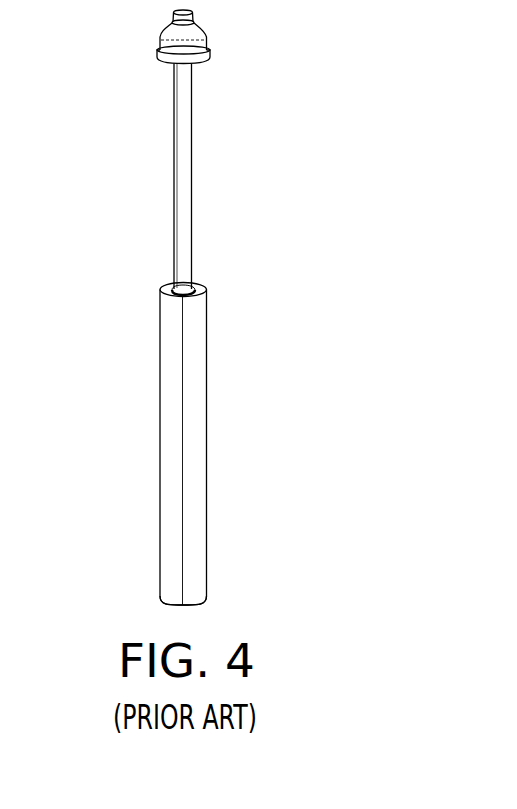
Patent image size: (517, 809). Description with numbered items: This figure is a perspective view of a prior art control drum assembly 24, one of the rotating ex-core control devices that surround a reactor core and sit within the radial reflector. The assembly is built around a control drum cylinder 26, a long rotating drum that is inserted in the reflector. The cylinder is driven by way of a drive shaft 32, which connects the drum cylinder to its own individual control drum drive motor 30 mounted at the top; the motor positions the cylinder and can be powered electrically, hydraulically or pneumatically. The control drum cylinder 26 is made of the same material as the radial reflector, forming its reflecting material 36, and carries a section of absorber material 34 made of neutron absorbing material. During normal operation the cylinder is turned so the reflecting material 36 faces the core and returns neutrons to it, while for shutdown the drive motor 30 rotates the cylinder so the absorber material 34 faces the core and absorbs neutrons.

The control drum assembly 24 is at (134, 197).
The control drum cylinder 26 is at (196, 387).
The control drum drive motor 30 is at (207, 35).
The drive shaft 32 is at (192, 163).
The absorber material 34 is at (167, 357).
The reflecting material 36 is at (201, 556).